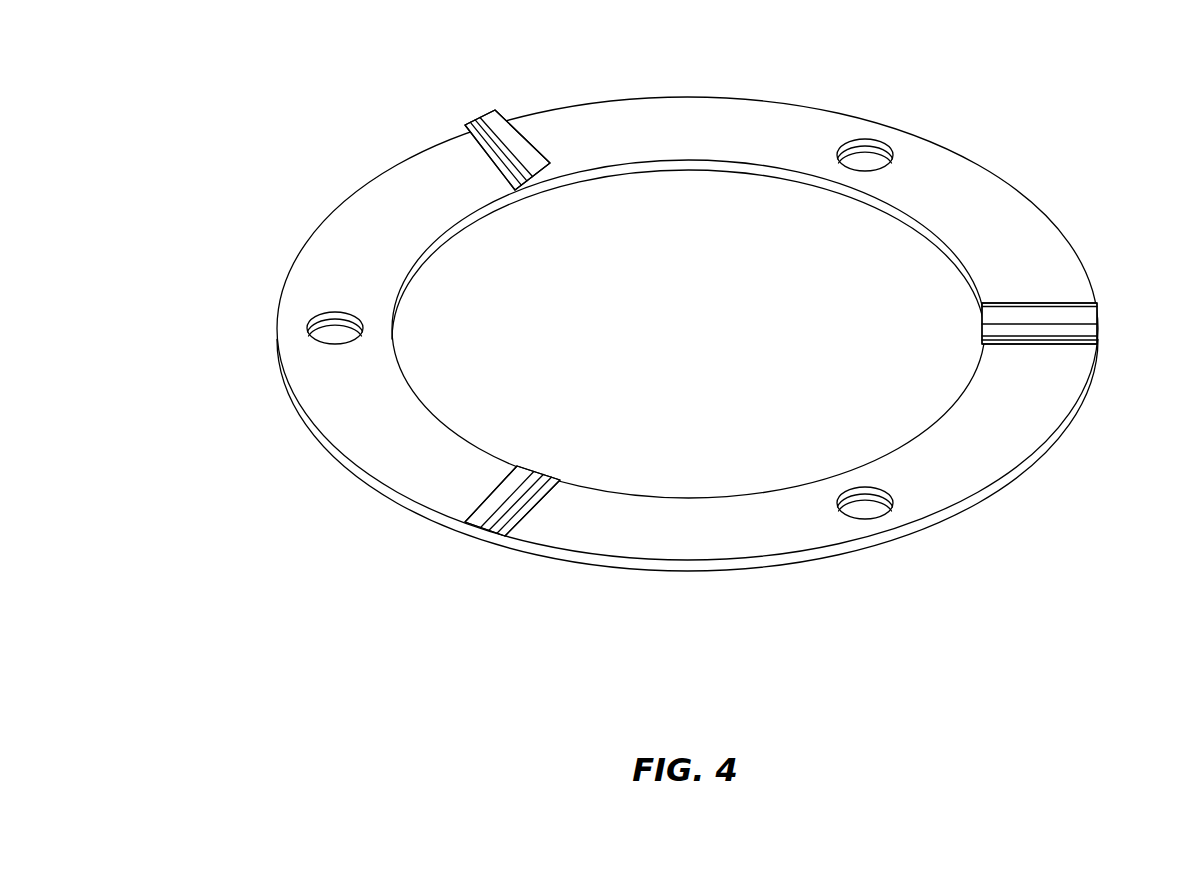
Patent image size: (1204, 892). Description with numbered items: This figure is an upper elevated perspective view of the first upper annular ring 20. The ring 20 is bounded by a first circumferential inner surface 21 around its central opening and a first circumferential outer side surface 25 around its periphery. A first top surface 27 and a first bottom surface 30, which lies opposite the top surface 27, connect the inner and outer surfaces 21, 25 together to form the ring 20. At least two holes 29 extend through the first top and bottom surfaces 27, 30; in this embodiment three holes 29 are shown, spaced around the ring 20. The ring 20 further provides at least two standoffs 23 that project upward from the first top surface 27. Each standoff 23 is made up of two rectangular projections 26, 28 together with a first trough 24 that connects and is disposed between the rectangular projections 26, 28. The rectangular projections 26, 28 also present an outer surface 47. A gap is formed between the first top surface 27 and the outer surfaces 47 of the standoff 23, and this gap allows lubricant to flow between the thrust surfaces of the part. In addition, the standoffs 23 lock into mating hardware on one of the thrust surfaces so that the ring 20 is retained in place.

The first upper annular ring 20 is at (668, 344).
The first circumferential inner surface 21 is at (660, 163).
The standoff 23 is at (776, 316).
The first trough 24 is at (487, 120).
The first circumferential outer side surface 25 is at (712, 565).
The rectangular projection 26 is at (470, 126).
The first top surface 27 is at (638, 374).
The rectangular projection 28 is at (500, 112).
The hole 29 is at (884, 143).
The first bottom surface 30 is at (355, 474).
The outer surface 47 is at (763, 291).